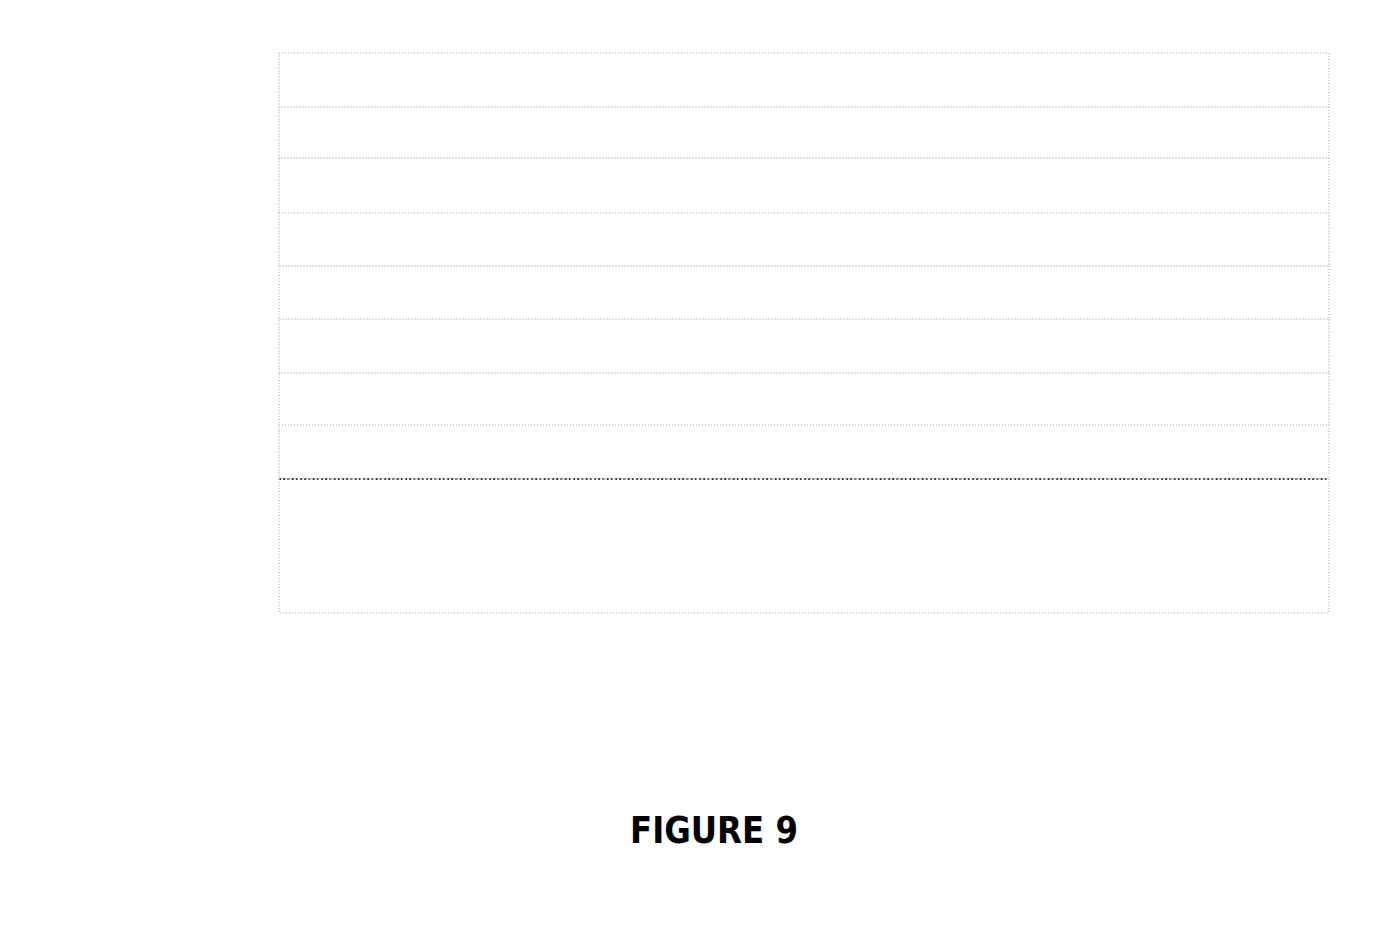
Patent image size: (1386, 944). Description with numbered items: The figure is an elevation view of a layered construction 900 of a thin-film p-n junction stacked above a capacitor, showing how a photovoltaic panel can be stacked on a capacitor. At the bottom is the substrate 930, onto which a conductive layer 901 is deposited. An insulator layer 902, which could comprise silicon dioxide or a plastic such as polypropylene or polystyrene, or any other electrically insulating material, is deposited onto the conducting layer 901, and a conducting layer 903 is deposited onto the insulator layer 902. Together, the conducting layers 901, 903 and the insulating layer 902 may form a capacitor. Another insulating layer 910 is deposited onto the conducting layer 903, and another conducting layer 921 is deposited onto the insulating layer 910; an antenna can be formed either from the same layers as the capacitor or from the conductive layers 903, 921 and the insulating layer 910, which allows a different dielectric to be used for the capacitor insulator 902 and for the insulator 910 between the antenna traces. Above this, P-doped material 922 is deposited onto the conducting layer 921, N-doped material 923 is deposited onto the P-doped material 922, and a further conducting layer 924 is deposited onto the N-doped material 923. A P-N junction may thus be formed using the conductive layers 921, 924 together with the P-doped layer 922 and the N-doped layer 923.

The device stack 900 is at (1208, 707).
The conducting layer 924 is at (253, 81).
The N-doped material 923 is at (253, 134).
The P-doped material 922 is at (253, 188).
The conducting layer 921 is at (253, 241).
The insulating layer 910 is at (253, 294).
The conducting layer 903 is at (253, 347).
The insulator layer 902 is at (253, 400).
The conductive layer 901 is at (253, 453).
The substrate 930 is at (253, 547).